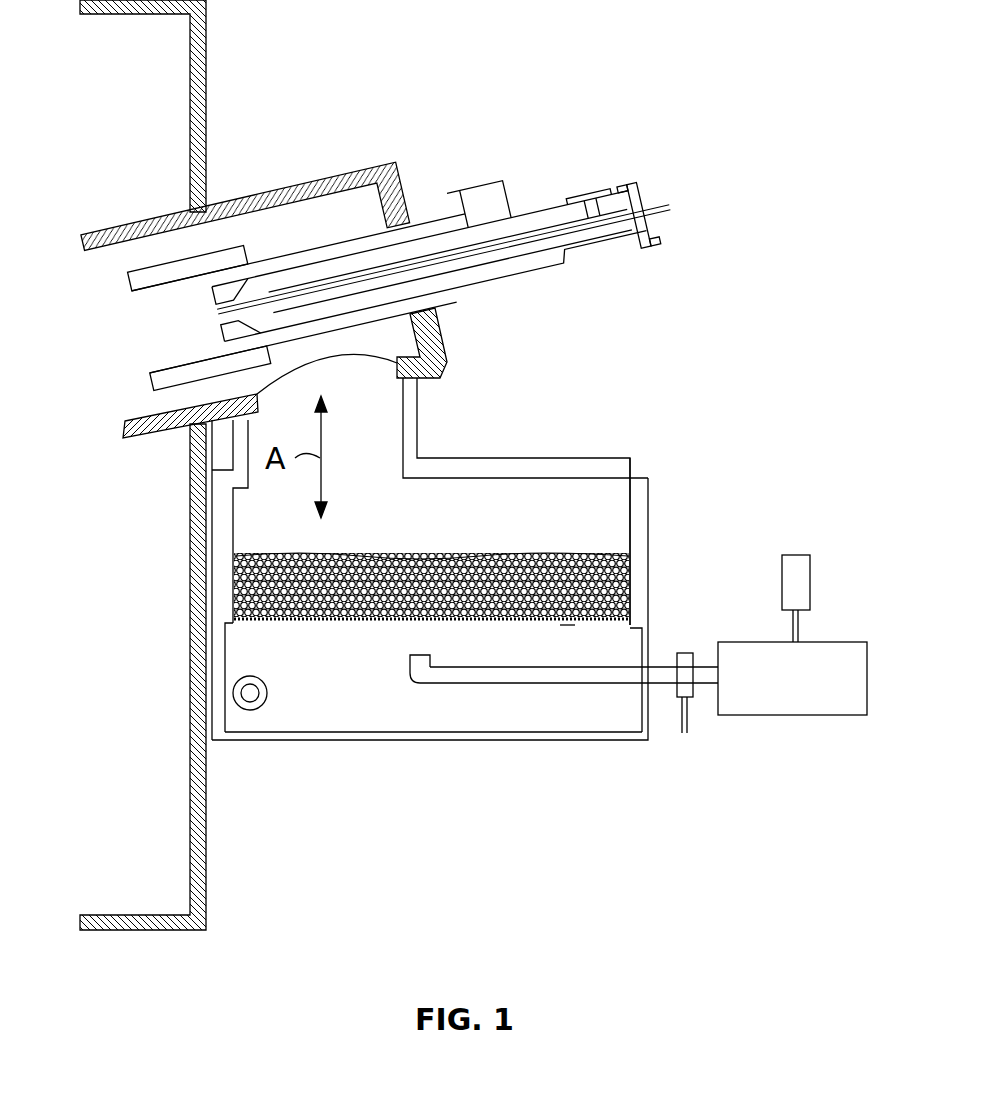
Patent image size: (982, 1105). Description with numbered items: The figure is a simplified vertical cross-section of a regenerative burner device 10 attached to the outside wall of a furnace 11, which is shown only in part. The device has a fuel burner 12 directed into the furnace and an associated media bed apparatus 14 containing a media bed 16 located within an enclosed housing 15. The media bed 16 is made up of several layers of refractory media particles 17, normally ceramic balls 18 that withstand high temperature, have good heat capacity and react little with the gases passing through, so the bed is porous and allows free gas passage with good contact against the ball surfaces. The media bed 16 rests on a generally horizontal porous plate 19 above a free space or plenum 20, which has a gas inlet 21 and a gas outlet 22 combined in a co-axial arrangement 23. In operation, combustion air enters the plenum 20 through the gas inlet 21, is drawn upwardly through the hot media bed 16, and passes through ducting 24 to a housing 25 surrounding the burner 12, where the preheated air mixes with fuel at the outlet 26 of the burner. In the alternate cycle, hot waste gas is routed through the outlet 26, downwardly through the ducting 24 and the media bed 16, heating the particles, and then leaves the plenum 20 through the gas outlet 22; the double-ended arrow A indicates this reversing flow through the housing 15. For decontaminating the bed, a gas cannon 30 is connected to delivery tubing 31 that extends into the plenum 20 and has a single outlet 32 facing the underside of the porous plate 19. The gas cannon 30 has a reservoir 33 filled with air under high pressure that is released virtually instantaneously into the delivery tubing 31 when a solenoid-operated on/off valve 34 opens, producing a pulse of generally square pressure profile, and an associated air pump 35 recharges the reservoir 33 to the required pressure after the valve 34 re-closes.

The regenerative burner device 10 is at (684, 146).
The furnace 11 is at (203, 115).
The fuel burner 12 is at (597, 240).
The media bed apparatus 14 is at (658, 458).
The housing 15 is at (641, 522).
The media bed 16 is at (570, 620).
The refractory media particles 17 is at (405, 552).
The ceramic balls 18 is at (278, 566).
The porous plate 19 is at (565, 627).
The plenum 20 is at (536, 660).
The gas inlet 21 is at (250, 676).
The gas outlet 22 is at (258, 693).
The co-axial arrangement 23 is at (282, 714).
The ducting 24 is at (370, 447).
The housing surrounding the burner 25 is at (134, 438).
The outlet of the burner 26 is at (142, 354).
The gas cannon 30 is at (790, 715).
The delivery tubing 31 is at (470, 683).
The outlet 32 is at (400, 687).
The reservoir 33 is at (802, 690).
The solenoid-operated on/off valve 34 is at (685, 653).
The air pump 35 is at (800, 587).